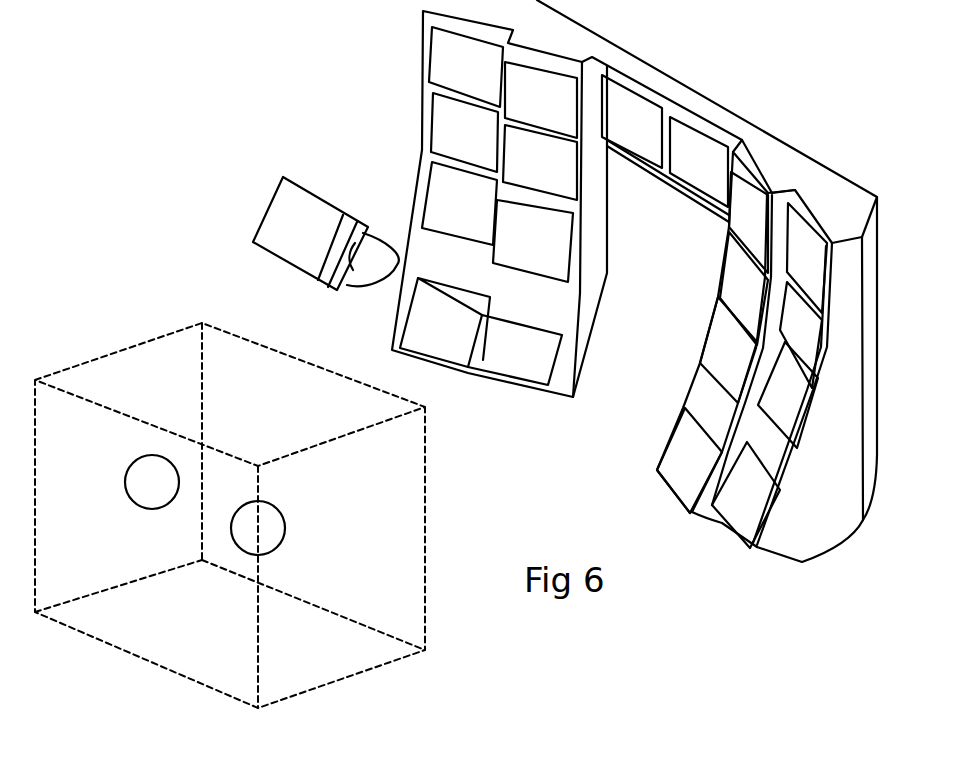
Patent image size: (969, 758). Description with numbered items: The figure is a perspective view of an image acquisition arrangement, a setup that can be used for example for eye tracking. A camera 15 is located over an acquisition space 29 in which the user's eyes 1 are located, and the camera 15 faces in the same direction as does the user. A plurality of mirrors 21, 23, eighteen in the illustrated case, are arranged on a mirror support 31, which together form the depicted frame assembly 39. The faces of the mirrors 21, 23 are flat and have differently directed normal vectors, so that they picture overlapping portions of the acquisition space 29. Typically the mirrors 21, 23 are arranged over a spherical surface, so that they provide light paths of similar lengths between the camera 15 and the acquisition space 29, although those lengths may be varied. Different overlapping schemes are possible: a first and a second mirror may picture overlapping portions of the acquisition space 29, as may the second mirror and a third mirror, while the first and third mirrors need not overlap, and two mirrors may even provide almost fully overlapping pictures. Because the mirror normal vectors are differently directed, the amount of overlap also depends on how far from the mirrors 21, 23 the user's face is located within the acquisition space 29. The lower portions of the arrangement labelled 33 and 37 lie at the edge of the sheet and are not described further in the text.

The frame structure 39 is at (377, 108).
The mirror support 31 is at (775, 152).
The mirror 21 is at (440, 333).
The mirror 23 is at (508, 360).
The camera 15 is at (287, 218).
The acquisition space 29 is at (390, 525).
The eyes 1 is at (140, 482).
The lower element 33 is at (460, 750).
The lower element 37 is at (770, 748).